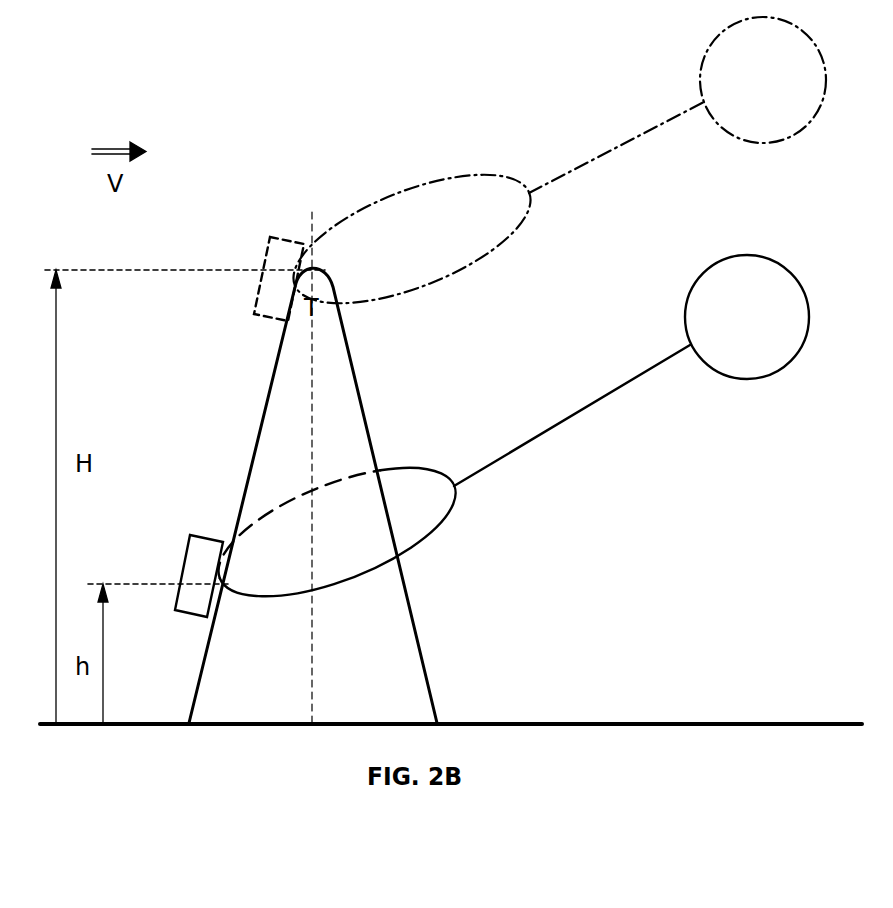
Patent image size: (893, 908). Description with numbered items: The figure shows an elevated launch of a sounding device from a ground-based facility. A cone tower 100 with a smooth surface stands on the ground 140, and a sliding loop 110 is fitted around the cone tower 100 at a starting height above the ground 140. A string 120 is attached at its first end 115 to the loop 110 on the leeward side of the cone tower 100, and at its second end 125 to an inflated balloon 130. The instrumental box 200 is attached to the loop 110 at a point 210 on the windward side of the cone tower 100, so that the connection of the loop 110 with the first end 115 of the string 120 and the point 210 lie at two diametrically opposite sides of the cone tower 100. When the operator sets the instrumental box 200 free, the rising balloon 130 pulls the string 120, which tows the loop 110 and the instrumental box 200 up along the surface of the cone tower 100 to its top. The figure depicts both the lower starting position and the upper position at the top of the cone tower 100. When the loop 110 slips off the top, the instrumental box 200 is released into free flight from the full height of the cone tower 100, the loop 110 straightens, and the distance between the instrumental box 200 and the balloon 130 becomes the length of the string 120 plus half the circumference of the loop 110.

The cone tower 100 is at (365, 682).
The sliding loop 110 is at (418, 292).
The first end 115 is at (523, 193).
The string 120 is at (577, 167).
The second end 125 is at (700, 103).
The inflated balloon 130 is at (757, 90).
The ground 140 is at (630, 718).
The instrumental box 200 is at (260, 287).
The point 210 is at (292, 278).